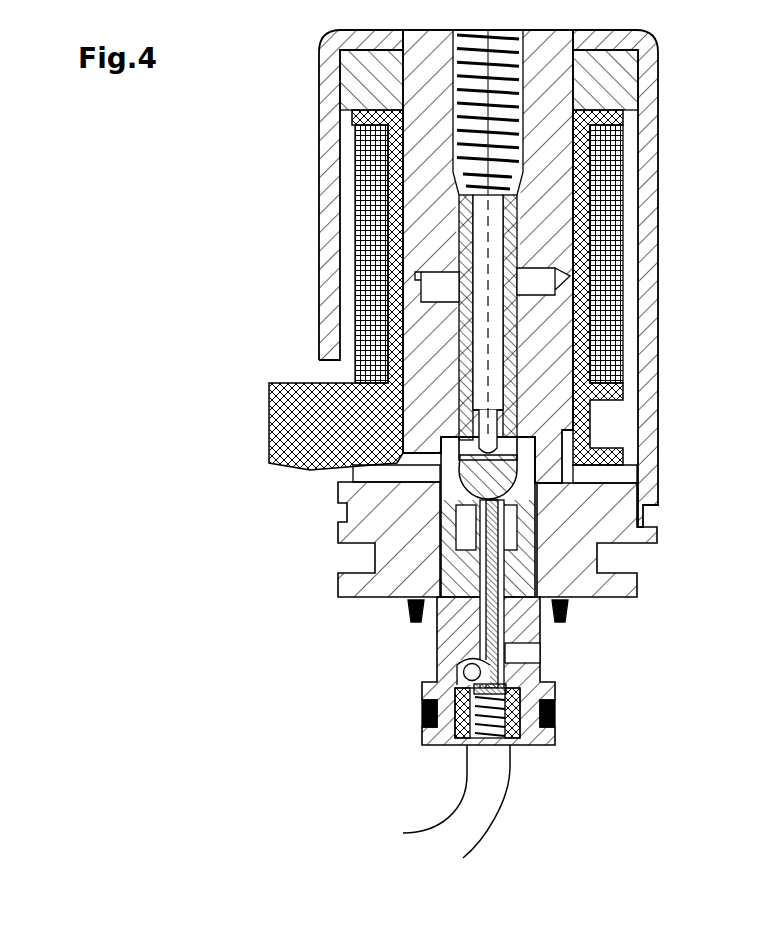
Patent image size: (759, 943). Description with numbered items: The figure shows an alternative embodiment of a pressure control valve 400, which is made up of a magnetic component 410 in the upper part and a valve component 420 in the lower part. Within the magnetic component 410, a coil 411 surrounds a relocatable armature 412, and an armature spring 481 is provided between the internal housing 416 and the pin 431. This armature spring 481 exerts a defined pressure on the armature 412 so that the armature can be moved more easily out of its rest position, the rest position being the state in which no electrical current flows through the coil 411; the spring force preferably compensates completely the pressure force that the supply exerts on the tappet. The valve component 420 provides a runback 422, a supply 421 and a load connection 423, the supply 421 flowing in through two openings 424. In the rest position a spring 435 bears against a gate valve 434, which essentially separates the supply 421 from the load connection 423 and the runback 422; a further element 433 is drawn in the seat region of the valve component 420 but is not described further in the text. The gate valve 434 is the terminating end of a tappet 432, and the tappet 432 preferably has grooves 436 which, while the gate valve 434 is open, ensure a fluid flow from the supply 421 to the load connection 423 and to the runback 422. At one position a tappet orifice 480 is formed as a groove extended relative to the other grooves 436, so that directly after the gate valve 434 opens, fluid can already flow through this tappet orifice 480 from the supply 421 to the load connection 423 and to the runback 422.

The pressure control valve 400 is at (186, 205).
The magnetic component 410 is at (243, 289).
The coil 411 is at (608, 217).
The relocatable armature 412 is at (545, 82).
The internal housing 416 is at (543, 30).
The valve component 420 is at (239, 519).
The supply 421 is at (525, 763).
The runback 422 is at (428, 469).
The load connection 423 is at (520, 657).
The openings 424 is at (465, 858).
The pin 431 is at (513, 303).
The tappet 432 is at (481, 630).
The valve seat element 433 is at (518, 495).
The gate valve 434 is at (502, 699).
The return spring 435 is at (480, 692).
The grooves 436 is at (492, 644).
The tappet orifice 480 is at (468, 674).
The armature spring 481 is at (495, 97).